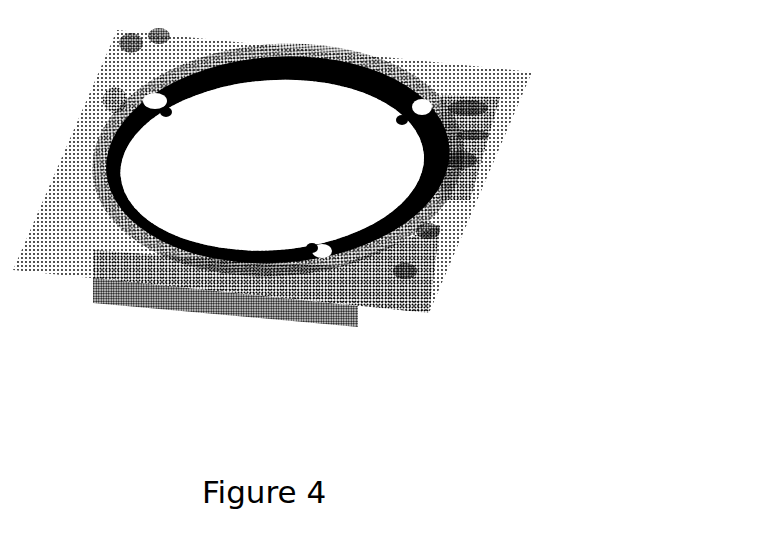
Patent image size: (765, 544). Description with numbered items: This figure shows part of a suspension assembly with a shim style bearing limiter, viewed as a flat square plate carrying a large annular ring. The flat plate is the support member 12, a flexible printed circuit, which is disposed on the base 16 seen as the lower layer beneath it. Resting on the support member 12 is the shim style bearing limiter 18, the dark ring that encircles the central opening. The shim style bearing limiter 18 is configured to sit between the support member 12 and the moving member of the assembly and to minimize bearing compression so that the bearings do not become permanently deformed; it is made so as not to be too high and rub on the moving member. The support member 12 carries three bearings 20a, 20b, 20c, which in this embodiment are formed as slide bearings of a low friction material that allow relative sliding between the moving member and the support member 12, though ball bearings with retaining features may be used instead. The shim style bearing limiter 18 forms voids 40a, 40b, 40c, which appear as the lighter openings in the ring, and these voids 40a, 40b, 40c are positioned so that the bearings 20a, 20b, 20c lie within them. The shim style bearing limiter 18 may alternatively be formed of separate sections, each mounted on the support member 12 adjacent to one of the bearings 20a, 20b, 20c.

The support member 12 is at (440, 222).
The base 16 is at (508, 130).
The shim style bearing limiter 18 is at (478, 103).
The bearing 20a is at (395, 123).
The bearing 20b is at (172, 115).
The bearing 20c is at (313, 243).
The void 40a is at (385, 103).
The void 40b is at (185, 100).
The void 40c is at (330, 243).